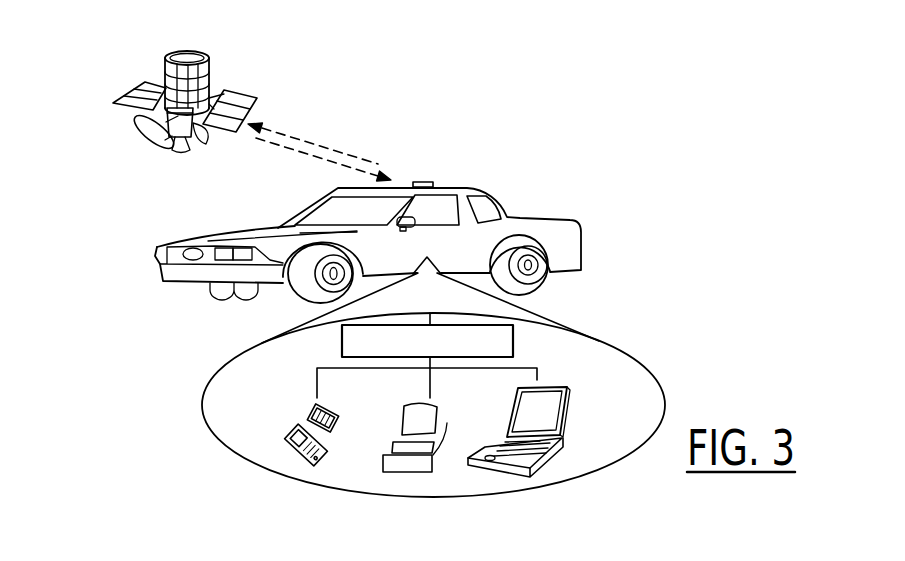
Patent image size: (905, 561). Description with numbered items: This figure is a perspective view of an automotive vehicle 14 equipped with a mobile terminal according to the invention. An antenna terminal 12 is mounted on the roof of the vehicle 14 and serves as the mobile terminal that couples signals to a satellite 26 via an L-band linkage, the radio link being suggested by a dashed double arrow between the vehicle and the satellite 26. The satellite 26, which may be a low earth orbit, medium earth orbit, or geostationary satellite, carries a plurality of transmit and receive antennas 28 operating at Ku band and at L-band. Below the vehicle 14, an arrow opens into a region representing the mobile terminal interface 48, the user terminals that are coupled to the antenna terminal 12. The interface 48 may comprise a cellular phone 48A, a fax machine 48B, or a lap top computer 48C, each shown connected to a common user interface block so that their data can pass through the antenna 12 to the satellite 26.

The mobile terminal antenna 12 is at (423, 181).
The automotive vehicle 14 is at (522, 218).
The satellite 26 is at (210, 72).
The transmit and receive antennas 28 is at (172, 150).
The mobile terminal interface 48 is at (513, 340).
The cellular phone 48A is at (283, 457).
The fax machine 48B is at (383, 470).
The lap top computer 48C is at (537, 470).